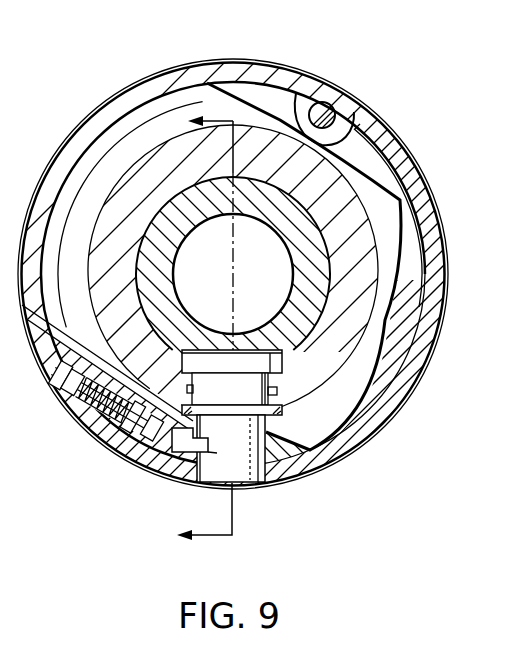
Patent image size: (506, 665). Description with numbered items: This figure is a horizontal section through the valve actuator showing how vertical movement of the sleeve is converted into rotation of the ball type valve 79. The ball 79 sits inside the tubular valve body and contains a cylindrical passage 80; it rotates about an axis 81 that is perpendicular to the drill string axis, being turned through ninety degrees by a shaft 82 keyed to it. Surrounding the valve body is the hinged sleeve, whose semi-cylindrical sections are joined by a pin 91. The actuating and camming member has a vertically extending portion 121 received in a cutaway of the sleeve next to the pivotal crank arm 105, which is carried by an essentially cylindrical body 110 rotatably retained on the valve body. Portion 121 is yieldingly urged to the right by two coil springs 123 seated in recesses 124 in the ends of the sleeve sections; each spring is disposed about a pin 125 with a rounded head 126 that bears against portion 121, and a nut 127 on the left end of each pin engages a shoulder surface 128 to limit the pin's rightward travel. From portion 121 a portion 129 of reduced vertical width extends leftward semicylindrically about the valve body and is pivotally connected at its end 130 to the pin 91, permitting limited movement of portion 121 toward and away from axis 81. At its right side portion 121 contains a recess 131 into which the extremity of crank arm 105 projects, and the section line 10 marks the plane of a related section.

The section line 10- 10 is at (197, 337).
The ball type valve 79 is at (410, 183).
The cylindrical passage 80 is at (300, 240).
The axis 81 is at (232, 250).
The shaft 82 is at (258, 392).
The pin 91 is at (340, 95).
The crank arm 105 is at (196, 446).
The externally cylindrical body 110 is at (235, 467).
The vertically extending portion 121 is at (173, 453).
The coil springs 123 is at (100, 418).
The recesses 124 is at (133, 372).
The pins 125 is at (137, 403).
The rounded heads 126 is at (137, 450).
The nut 127 is at (55, 387).
The shoulder surface 128 is at (57, 400).
The portion of reduced vertical width 129 is at (80, 120).
The end 130 is at (310, 97).
The recess 131 is at (197, 430).